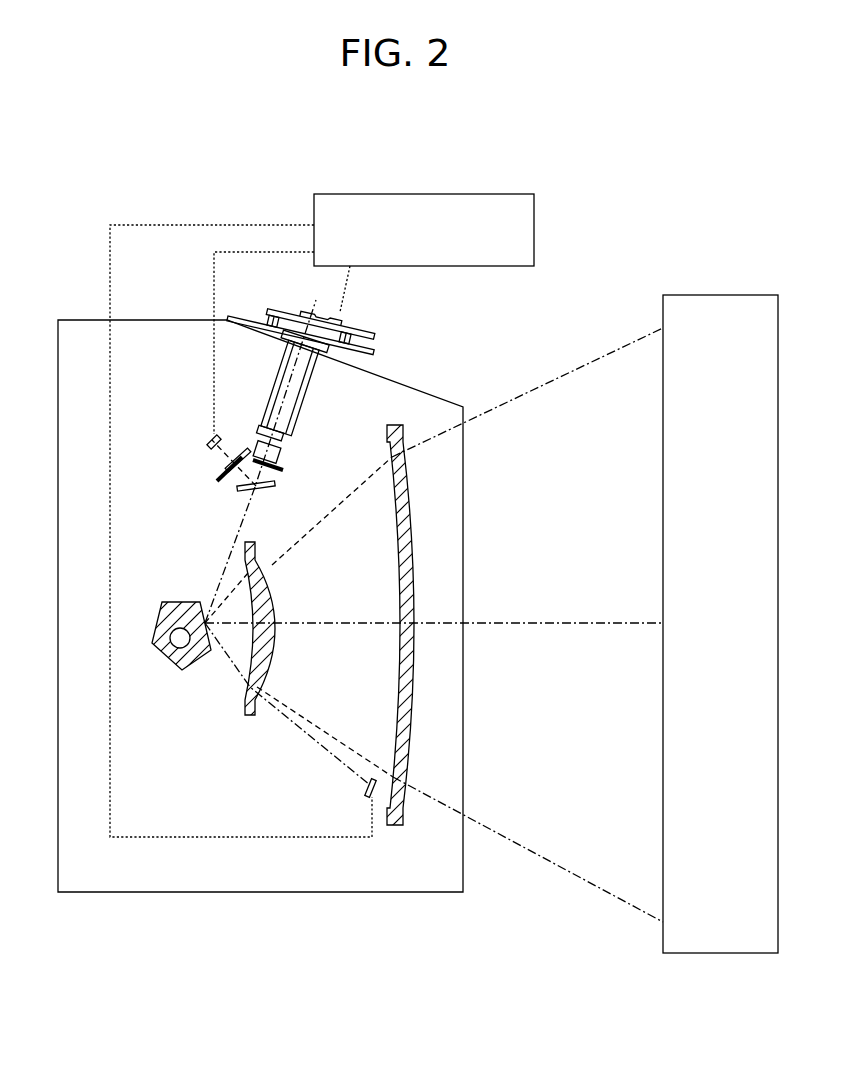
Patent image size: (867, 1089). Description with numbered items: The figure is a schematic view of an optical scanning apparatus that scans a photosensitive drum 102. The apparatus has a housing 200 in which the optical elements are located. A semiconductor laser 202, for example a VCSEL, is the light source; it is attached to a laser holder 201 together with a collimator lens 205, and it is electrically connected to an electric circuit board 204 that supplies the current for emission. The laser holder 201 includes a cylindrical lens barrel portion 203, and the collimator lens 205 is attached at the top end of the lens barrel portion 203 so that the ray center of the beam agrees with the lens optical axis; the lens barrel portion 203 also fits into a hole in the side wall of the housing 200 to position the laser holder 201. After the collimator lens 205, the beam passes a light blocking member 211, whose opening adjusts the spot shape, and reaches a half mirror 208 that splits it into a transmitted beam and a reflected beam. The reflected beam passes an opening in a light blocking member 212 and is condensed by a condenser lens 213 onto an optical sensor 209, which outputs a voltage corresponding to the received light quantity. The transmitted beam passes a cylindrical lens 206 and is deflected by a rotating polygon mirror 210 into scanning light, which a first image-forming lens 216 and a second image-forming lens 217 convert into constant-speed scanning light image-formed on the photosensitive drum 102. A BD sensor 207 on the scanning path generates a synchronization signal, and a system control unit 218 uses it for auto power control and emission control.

The photosensitive drum 102 is at (663, 690).
The housing 200 is at (464, 781).
The laser holder 201 is at (247, 320).
The semiconductor laser 202 is at (306, 324).
The lens barrel portion 203 is at (315, 382).
The electric circuit board 204 is at (358, 347).
The collimator lens 205 is at (290, 438).
The cylindrical lens 206 is at (282, 456).
The BD sensor 207 is at (365, 788).
The half mirror 208 is at (258, 489).
The optical sensor 209 is at (206, 436).
The polygon mirror 210 is at (170, 664).
The light blocking member 211 is at (280, 470).
The light blocking member 212 is at (220, 479).
The condenser lens 213 is at (225, 466).
The first image-forming lens 216 is at (247, 710).
The second image-forming lens 217 is at (415, 712).
The system control unit 218 is at (414, 194).